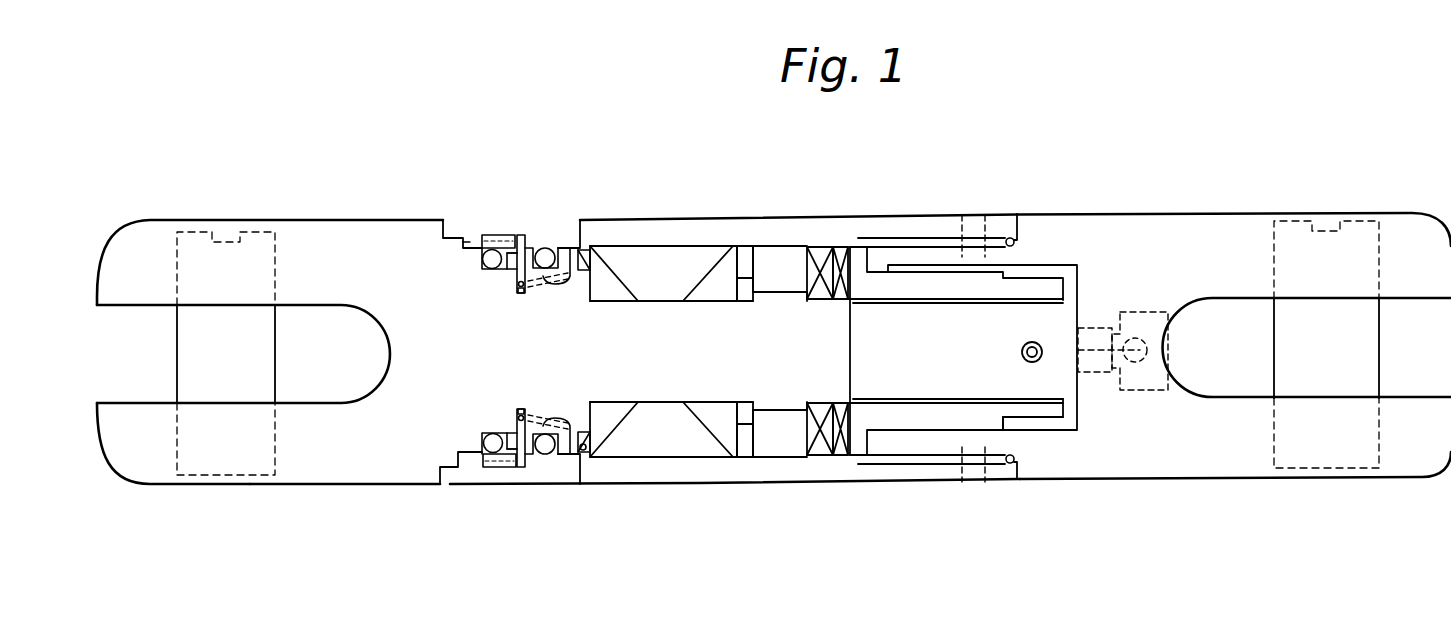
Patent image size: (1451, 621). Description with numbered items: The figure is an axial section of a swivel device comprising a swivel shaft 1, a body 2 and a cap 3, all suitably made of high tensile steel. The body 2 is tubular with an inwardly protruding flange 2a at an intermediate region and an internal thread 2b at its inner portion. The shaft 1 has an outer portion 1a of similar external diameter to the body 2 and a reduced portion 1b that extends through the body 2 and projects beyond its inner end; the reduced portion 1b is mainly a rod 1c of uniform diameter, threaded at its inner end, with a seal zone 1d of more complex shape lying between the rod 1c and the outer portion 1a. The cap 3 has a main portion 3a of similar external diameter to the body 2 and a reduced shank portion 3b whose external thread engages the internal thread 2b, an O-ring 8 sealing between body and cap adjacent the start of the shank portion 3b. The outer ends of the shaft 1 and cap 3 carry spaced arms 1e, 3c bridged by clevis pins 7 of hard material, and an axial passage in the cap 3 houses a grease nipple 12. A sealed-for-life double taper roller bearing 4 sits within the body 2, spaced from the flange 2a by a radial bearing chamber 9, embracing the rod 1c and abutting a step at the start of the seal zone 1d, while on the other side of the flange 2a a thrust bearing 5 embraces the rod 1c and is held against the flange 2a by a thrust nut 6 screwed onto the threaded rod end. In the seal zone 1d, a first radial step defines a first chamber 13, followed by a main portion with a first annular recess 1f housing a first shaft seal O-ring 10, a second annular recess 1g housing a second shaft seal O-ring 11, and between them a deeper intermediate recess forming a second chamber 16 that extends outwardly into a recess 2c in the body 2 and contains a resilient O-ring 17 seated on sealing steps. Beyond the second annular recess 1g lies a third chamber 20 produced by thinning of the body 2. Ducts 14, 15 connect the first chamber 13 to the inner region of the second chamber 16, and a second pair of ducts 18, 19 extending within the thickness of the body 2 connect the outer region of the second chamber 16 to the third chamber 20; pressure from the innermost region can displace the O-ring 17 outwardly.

The swivel shaft 1 is at (141, 460).
The outer portion 1a is at (328, 477).
The reduced portion 1b is at (660, 390).
The rod 1c is at (882, 364).
The seal zone 1d is at (533, 361).
The spaced arms 1e is at (140, 293).
The first annular recess 1f is at (535, 293).
The second annular recess 1g is at (480, 270).
The body 2 is at (777, 462).
The inwardly protruding flange 2a is at (782, 283).
The internal thread 2b is at (922, 253).
The recess 2c is at (521, 234).
The cap 3 is at (1425, 455).
The main portion 3a is at (1215, 213).
The reduced shank portion 3b is at (977, 417).
The spaced arms 3c is at (1413, 285).
The double taper roller bearing 4 is at (682, 265).
The thrust bearing 5 is at (823, 253).
The thrust nut 6 is at (940, 415).
The clevis pins 7 is at (228, 278).
The O-ring 8 is at (1013, 237).
The radial bearing chamber 9 is at (750, 260).
The first shaft seal O-ring 10 is at (549, 248).
The second shaft seal O-ring 11 is at (482, 260).
The grease nipple 12 is at (1125, 330).
The first chamber 13 is at (598, 255).
The duct 14 is at (583, 250).
The duct 15 is at (584, 452).
The second chamber 16 is at (527, 462).
The O-ring 17 is at (512, 246).
The seal 18 is at (497, 234).
The duct 19 is at (500, 468).
The third chamber 20 is at (468, 462).